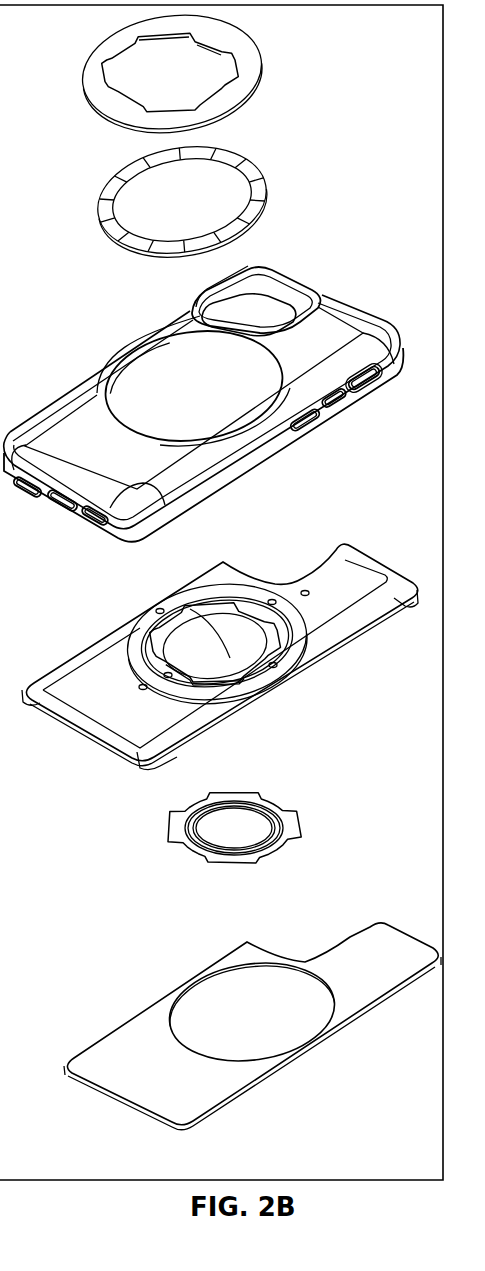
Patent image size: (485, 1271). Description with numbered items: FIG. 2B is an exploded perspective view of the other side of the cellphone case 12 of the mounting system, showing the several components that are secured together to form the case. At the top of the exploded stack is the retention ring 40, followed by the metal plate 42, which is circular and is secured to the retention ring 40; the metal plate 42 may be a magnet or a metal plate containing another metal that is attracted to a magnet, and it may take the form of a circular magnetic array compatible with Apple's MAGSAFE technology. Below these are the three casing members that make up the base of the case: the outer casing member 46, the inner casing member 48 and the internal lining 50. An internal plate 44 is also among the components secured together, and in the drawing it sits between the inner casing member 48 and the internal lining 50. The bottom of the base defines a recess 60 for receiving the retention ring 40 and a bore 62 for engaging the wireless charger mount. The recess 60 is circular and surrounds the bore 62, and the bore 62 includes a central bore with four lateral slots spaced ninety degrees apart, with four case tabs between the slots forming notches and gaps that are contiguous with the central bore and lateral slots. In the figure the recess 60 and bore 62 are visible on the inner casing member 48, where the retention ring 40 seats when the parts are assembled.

The cellphone case 12 is at (318, 70).
The retention ring 40 is at (228, 95).
The metal plate 42 is at (261, 185).
The internal plate 44 is at (270, 802).
The outer casing member 46 is at (347, 305).
The inner casing member 48 is at (223, 645).
The internal lining 50 is at (388, 940).
The recess 60 is at (288, 650).
The bore 62 is at (197, 608).